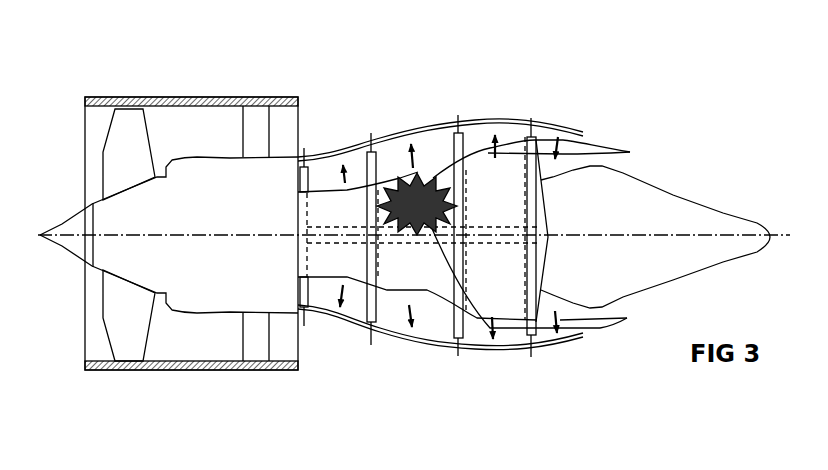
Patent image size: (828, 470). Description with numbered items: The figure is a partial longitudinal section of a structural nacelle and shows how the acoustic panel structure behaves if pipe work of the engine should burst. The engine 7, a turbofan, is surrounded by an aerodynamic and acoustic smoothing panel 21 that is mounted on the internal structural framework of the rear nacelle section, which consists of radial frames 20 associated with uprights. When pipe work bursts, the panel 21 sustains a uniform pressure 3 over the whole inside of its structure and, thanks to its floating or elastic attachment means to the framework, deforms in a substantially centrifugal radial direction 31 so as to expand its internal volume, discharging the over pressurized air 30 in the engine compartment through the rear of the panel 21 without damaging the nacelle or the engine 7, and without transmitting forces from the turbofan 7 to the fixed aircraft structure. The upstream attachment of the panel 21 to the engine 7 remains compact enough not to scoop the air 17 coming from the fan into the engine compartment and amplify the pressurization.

The uniform pressure 3 is at (534, 237).
The engine 7 is at (202, 263).
The air coming from the fan 17 is at (208, 335).
The radial frame 20 is at (365, 153).
The aerodynamic and acoustic smoothing panel 21 is at (513, 118).
The over pressurized air 30 is at (565, 140).
The centrifugal radial direction 31 is at (570, 133).